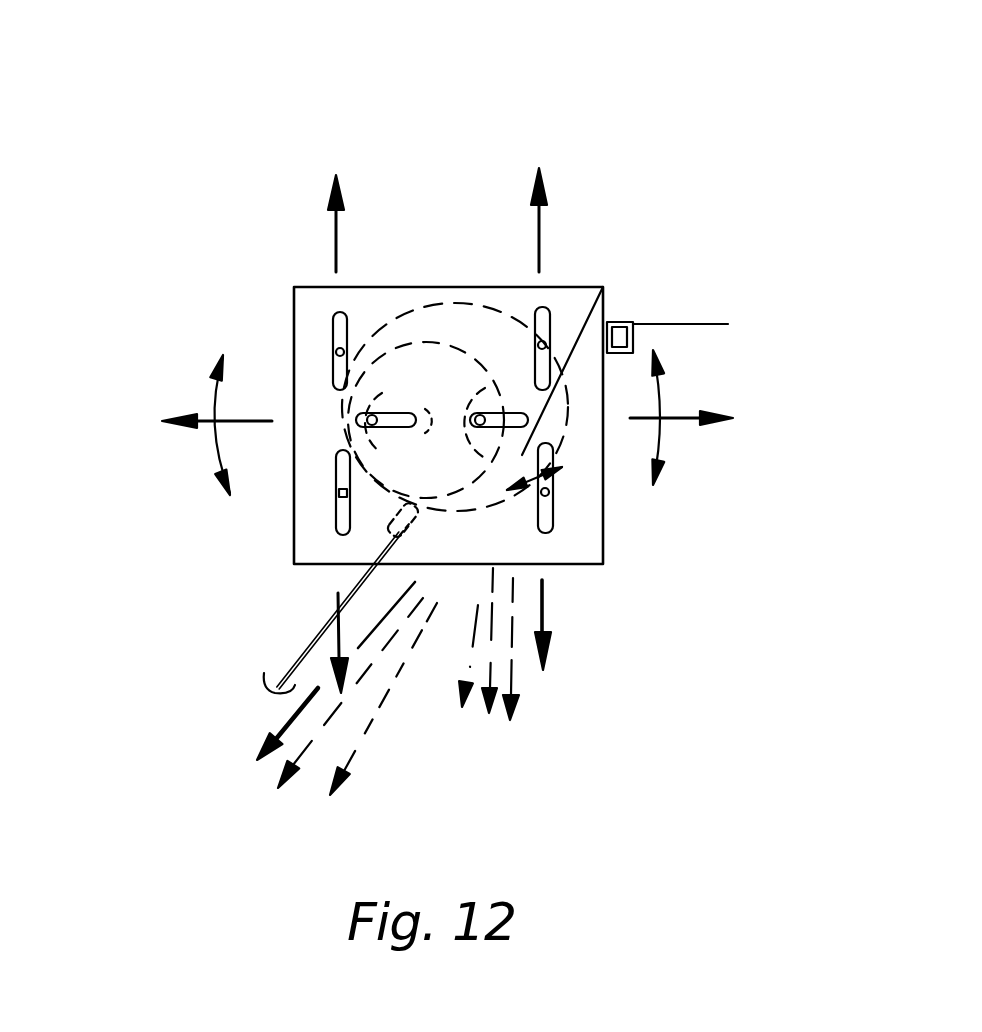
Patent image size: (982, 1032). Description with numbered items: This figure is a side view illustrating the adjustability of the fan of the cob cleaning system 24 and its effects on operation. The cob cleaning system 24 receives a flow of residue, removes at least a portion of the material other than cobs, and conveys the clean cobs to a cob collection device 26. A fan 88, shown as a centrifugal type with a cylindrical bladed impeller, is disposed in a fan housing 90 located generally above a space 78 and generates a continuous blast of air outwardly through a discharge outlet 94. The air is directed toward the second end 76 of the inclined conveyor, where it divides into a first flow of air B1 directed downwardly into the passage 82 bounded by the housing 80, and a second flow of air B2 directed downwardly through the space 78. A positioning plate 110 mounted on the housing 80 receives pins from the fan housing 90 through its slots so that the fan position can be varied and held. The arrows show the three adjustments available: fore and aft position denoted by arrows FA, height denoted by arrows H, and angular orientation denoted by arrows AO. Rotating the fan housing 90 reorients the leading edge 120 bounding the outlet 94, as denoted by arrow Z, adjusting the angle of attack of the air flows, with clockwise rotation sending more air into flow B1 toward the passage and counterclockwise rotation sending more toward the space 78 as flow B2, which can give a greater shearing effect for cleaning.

The cob cleaning system 24 is at (503, 112).
The cob collection device 26 is at (706, 299).
The second end 76 is at (385, 593).
The space 78 is at (423, 757).
The housing 80 is at (297, 658).
The passage 82 is at (287, 693).
The fan 88 is at (405, 344).
The fan housing 90 is at (452, 302).
The discharge outlet 94 is at (603, 287).
The positioning plate 110 is at (293, 302).
The leading edge 120 is at (567, 433).
The height arrows H is at (332, 232).
The angular orientation arrows AO is at (212, 395).
The fore and aft position arrows FA is at (205, 423).
The leading edge reorientation arrow Z is at (527, 483).
The first flow of air B1 is at (313, 833).
The second flow of air B2 is at (447, 733).